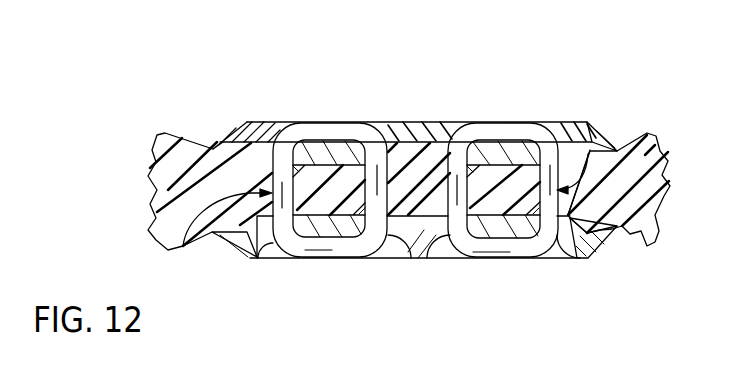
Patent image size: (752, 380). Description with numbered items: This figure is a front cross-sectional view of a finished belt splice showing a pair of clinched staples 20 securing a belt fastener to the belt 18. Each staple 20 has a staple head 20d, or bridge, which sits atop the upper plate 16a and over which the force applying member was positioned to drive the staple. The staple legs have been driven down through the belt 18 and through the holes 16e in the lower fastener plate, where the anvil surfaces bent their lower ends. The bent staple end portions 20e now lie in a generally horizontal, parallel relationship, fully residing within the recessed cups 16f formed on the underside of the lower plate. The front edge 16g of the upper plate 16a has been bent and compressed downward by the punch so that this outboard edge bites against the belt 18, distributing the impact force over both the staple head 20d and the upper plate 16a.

The upper plate 16a is at (412, 122).
The hole 16e is at (300, 223).
The cup 16f is at (385, 250).
The front edge 16g is at (220, 122).
The belt 18 is at (189, 133).
The staple 20 is at (593, 128).
The staple head 20d is at (331, 122).
The staple end portion 20e is at (336, 240).